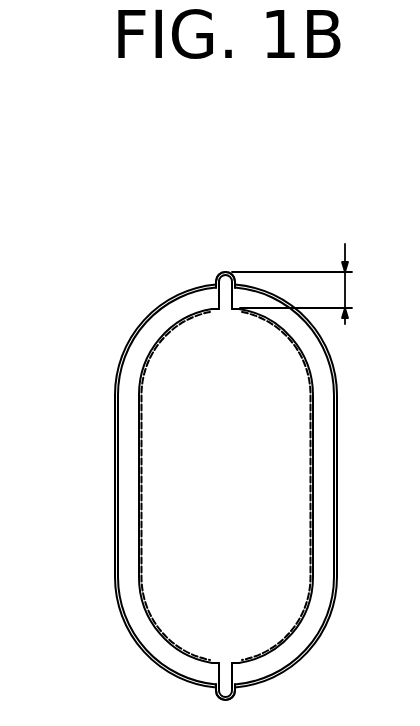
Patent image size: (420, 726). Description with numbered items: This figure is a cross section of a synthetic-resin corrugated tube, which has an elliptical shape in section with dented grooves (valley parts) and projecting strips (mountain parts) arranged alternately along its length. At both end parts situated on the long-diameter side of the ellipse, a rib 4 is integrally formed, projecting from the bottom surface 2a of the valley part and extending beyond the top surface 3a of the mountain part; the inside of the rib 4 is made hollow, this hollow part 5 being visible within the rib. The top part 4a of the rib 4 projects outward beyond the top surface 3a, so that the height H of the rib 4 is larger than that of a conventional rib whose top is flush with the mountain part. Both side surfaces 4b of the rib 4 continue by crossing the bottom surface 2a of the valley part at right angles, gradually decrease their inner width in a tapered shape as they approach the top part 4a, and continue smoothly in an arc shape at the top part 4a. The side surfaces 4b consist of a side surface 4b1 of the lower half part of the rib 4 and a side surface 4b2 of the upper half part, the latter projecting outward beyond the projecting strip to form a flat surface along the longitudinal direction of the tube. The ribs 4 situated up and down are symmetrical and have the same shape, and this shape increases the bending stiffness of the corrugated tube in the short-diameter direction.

The outer peripheral surface (bottom surface) of the valley part 2a is at (170, 329).
The top surface of the mountain part 3a is at (123, 357).
The rib 4 is at (237, 281).
The top part of the rib 4a is at (222, 278).
The side surfaces of the rib 4b is at (159, 419).
The side surface of the lower half part of the rib 4b1 is at (200, 308).
The side surface of the upper half part of the rib 4b2 is at (208, 278).
The hollow part 5 is at (229, 300).
The height of the rib H is at (302, 284).